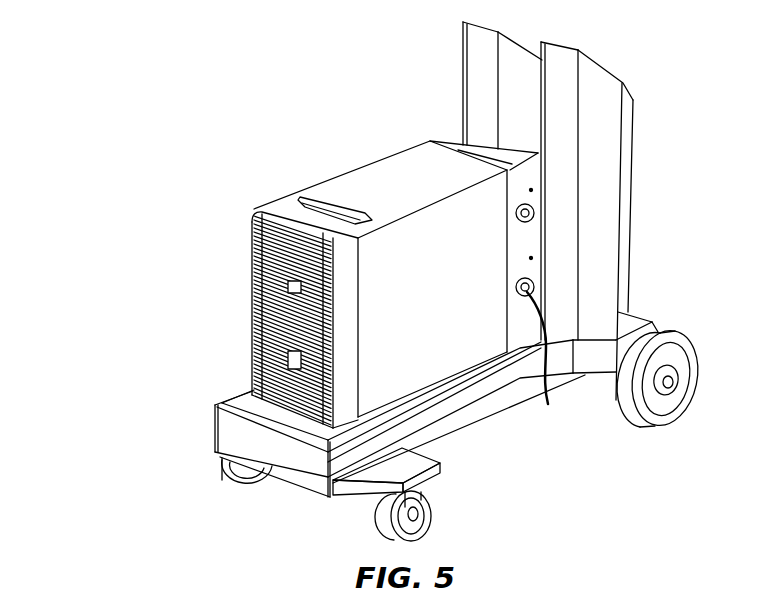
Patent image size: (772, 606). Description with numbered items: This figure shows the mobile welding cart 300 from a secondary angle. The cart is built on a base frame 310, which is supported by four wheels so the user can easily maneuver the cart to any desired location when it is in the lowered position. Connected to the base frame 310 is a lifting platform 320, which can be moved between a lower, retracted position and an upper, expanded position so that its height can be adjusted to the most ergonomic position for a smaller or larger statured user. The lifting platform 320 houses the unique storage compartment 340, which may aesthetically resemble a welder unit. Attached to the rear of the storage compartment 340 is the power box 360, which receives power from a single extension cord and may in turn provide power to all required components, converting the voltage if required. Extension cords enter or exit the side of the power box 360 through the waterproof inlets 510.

The mobile welding cart 300 is at (165, 136).
The base frame 310 is at (250, 472).
The lifting platform 320 is at (233, 417).
The storage compartment 340 is at (387, 170).
The power box 360 is at (455, 140).
The waterproof inlets 510 is at (552, 367).